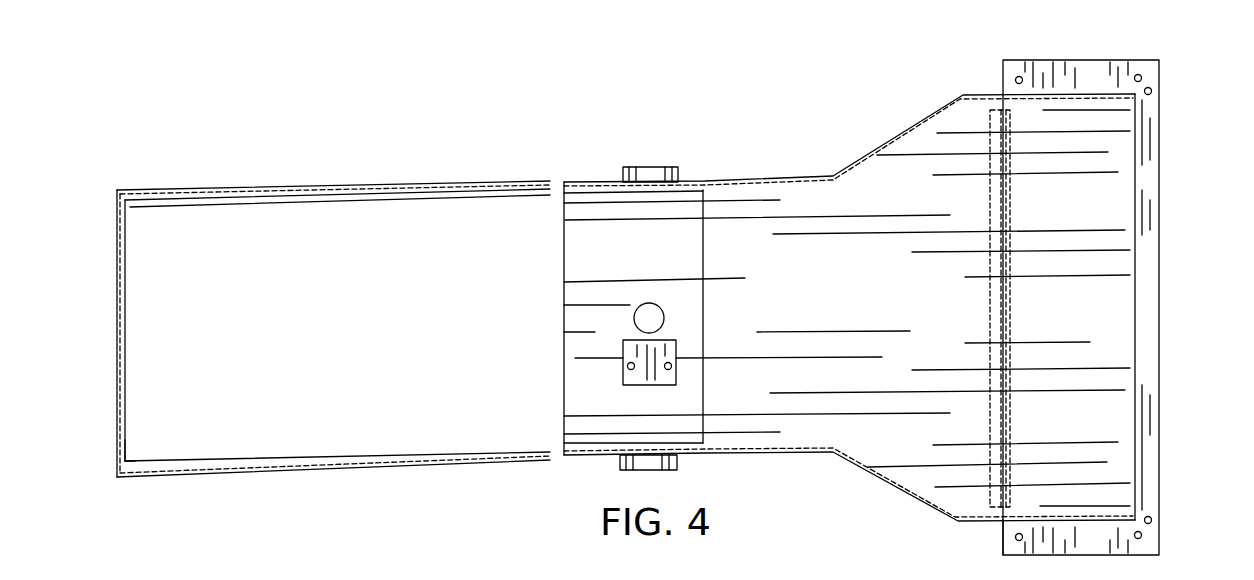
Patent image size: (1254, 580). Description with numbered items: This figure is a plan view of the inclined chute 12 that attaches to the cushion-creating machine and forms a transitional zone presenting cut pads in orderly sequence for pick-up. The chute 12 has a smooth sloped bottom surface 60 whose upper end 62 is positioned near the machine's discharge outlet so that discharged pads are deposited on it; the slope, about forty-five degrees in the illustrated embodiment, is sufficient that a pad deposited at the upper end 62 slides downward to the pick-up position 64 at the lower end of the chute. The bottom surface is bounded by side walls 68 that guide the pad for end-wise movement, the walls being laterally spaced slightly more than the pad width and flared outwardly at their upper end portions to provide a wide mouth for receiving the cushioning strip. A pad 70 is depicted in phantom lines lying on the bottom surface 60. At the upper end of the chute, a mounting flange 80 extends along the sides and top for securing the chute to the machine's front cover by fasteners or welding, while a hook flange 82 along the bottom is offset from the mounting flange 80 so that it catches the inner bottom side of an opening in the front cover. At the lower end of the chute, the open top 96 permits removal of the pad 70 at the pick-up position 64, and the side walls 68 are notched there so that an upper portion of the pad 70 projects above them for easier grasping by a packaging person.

The inclined chute 12 is at (423, 155).
The sloped bottom surface 60 is at (334, 377).
The upper end 62 is at (1163, 80).
The pick-up position 64 is at (315, 247).
The side walls 68 is at (486, 182).
The pad 70 is at (343, 453).
The mounting flange 80 is at (1100, 547).
The hook flange 82 is at (988, 440).
The open top 96 is at (218, 408).